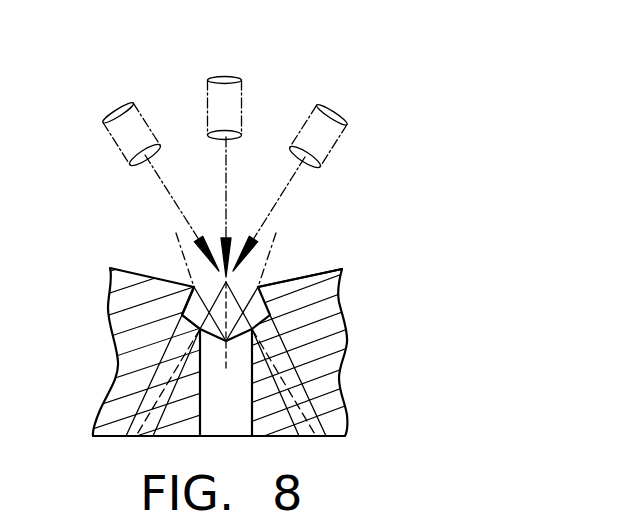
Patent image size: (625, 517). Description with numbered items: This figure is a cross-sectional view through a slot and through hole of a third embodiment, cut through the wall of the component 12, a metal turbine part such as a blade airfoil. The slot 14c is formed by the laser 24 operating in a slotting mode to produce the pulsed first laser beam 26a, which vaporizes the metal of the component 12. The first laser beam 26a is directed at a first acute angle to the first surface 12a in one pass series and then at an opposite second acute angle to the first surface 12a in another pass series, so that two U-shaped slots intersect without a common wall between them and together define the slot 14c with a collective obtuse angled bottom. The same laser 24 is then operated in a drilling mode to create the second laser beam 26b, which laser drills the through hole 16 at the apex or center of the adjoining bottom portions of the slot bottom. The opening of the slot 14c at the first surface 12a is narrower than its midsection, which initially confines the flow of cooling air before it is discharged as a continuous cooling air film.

The component 12 is at (340, 305).
The first surface 12a is at (288, 282).
The slot 14c is at (190, 298).
The through hole 16 is at (245, 418).
The laser 24 is at (343, 114).
The first laser beam 26a is at (171, 197).
The second laser beam 26b is at (223, 156).